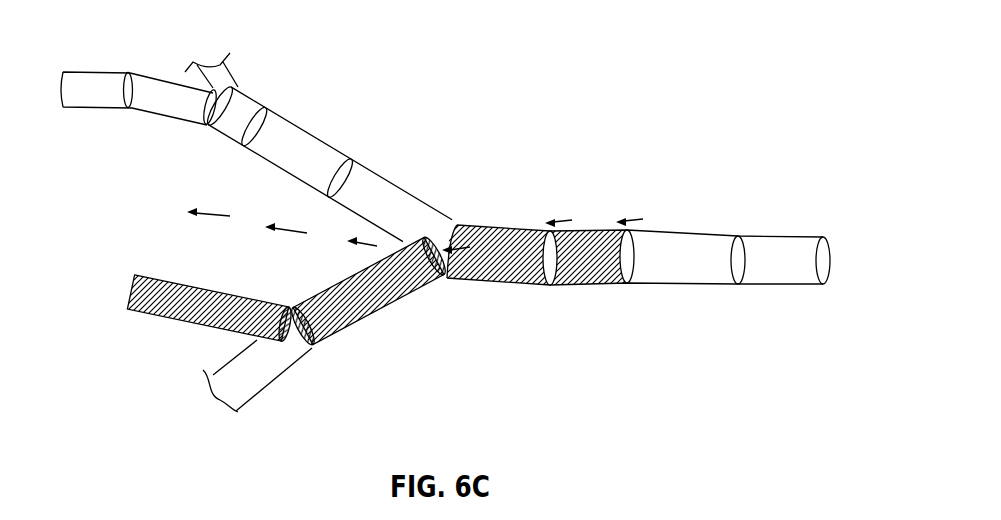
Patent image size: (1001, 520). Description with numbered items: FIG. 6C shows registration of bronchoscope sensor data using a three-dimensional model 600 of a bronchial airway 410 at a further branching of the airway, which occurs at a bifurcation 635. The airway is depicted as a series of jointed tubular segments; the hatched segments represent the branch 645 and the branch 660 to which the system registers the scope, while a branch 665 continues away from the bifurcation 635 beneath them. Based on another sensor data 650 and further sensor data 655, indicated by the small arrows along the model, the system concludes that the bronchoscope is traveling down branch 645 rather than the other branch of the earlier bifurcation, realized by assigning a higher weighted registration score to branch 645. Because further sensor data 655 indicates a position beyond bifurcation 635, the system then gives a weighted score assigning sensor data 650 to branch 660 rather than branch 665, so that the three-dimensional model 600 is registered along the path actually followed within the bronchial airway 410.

The 3D model 600 is at (647, 40).
The bronchial airway 410 is at (797, 237).
The bifurcation 635 is at (255, 340).
The branch 645 is at (380, 292).
The another sensor data 650 is at (289, 230).
The further sensor data 655 is at (212, 208).
The branch 660 is at (192, 282).
The branch 665 is at (262, 390).